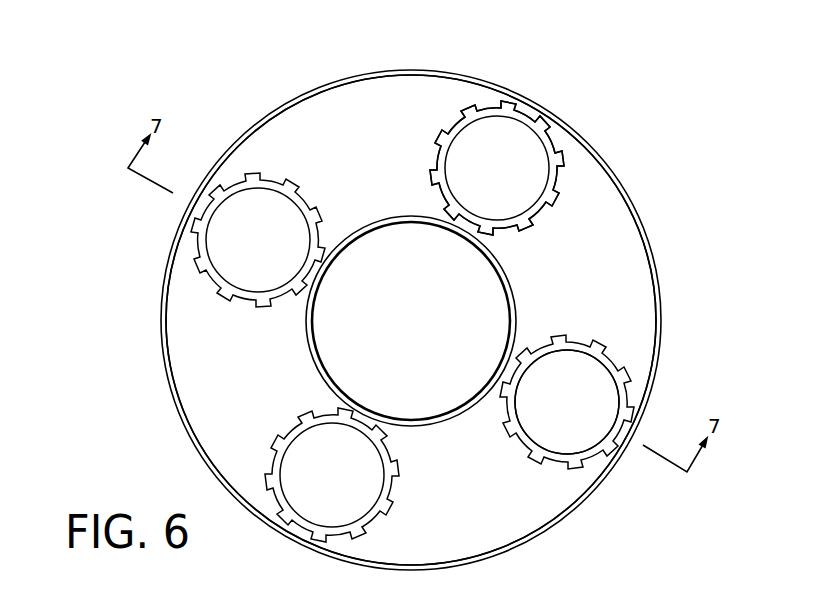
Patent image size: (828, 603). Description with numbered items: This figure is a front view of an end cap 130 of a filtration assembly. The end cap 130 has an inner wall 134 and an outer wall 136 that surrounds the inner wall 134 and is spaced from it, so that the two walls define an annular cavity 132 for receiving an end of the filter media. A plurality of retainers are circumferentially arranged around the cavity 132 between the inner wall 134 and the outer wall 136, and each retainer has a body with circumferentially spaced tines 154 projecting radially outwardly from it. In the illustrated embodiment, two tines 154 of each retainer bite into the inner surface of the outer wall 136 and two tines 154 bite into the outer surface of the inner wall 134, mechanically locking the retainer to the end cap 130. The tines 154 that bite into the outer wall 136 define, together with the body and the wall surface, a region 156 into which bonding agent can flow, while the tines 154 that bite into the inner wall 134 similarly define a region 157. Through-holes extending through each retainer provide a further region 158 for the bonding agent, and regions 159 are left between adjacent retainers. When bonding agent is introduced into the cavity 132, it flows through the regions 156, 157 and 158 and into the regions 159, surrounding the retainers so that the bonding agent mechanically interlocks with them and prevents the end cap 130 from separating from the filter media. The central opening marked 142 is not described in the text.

The end cap 130 is at (157, 357).
The cavity 132 is at (370, 131).
The inner wall 134 is at (397, 217).
The outer wall 136 is at (284, 108).
The central bore 142 is at (427, 334).
The tine 154 is at (510, 102).
The region 156 is at (528, 107).
The region 157 is at (511, 352).
The region 158 is at (513, 157).
The region 159 is at (625, 275).